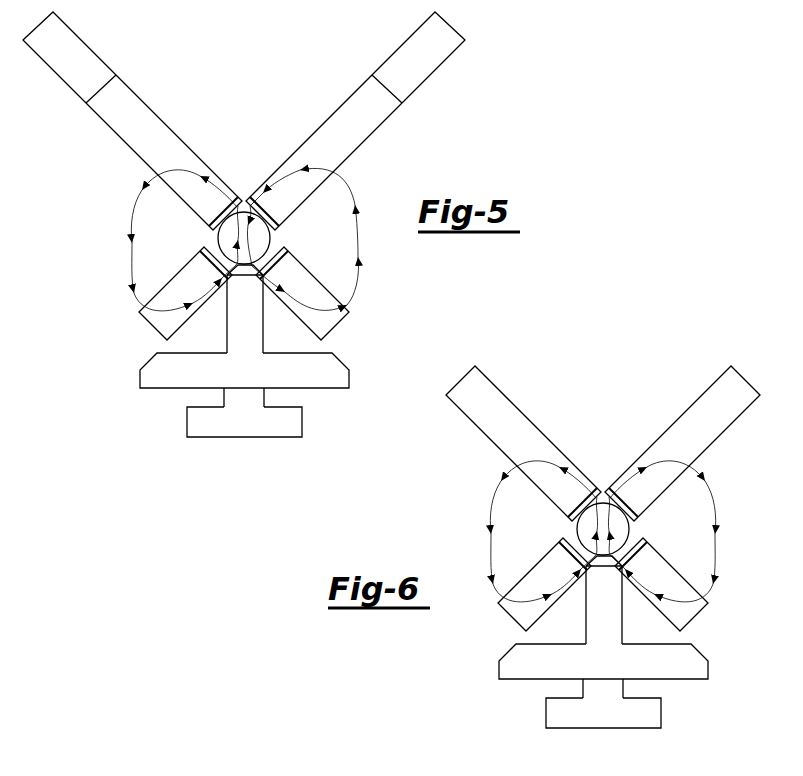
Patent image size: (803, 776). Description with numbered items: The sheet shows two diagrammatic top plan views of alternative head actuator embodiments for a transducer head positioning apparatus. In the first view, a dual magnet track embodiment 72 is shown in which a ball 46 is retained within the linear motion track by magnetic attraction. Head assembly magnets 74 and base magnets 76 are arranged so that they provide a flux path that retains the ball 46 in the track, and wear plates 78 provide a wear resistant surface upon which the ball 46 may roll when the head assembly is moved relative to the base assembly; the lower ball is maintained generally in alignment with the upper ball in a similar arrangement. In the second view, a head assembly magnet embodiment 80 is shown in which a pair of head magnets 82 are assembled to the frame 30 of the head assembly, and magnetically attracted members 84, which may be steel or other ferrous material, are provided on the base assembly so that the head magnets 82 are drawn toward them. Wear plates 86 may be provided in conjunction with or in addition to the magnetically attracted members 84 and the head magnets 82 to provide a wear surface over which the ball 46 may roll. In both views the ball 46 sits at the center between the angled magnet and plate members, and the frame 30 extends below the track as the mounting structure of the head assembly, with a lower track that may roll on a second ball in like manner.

In FIG. 5, the frame 30 is at (342, 378).
In FIG. 6, the frame 30 is at (505, 672).
In FIG. 5, the upper ball 46 is at (224, 237).
In FIG. 6, the upper ball 46 is at (581, 528).
In FIG. 5, the dual magnet track embodiment 72 is at (270, 106).
In FIG. 5, the head assembly magnets 74 is at (293, 313).
In FIG. 5, the base magnets 76 is at (293, 153).
In FIG. 5, the wear plates 78 is at (207, 247).
In FIG. 6, the head assembly magnet embodiment 80 is at (618, 392).
In FIG. 6, the head magnets 82 is at (650, 578).
In FIG. 6, the magnetically attracted members 84 is at (662, 443).
In FIG. 6, the wear plates 86 is at (633, 514).